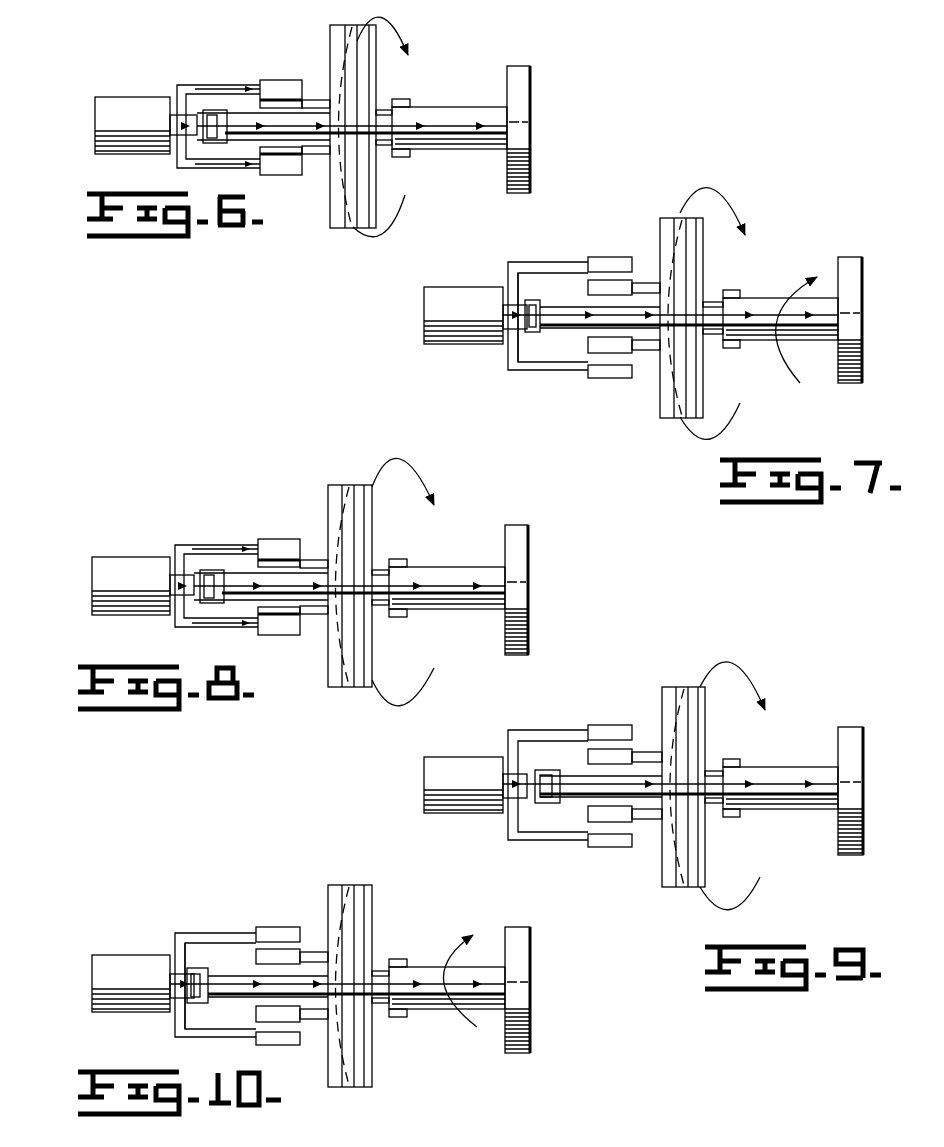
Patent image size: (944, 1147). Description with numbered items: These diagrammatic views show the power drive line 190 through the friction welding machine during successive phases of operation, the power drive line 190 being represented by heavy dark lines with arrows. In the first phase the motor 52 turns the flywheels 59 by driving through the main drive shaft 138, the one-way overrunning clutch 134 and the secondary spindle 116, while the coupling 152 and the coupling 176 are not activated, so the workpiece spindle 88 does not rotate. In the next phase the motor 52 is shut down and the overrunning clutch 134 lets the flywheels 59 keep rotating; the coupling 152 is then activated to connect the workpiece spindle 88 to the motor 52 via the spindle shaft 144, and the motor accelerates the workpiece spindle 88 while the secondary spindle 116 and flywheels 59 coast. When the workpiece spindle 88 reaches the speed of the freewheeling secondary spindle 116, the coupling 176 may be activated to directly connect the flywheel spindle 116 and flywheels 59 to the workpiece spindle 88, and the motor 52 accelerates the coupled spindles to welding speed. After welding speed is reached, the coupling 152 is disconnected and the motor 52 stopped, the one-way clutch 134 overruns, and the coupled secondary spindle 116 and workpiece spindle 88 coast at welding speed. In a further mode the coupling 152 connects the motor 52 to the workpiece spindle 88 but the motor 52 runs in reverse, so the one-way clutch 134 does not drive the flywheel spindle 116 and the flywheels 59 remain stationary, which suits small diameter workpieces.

In FIG. 6, the motor 52 is at (125, 144).
In FIG. 7, the motor 52 is at (463, 332).
In FIG. 8, the motor 52 is at (123, 608).
In FIG. 9, the motor 52 is at (463, 803).
In FIG. 10, the motor 52 is at (126, 1003).
In FIG. 6, the flywheels 59 is at (406, 125).
In FIG. 7, the flywheels 59 is at (671, 305).
In FIG. 8, the flywheels 59 is at (352, 579).
In FIG. 9, the flywheels 59 is at (682, 772).
In FIG. 10, the flywheels 59 is at (315, 962).
In FIG. 6, the workpiece spindle 88 is at (461, 130).
In FIG. 7, the workpiece spindle 88 is at (813, 317).
In FIG. 8, the workpiece spindle 88 is at (476, 590).
In FIG. 9, the workpiece spindle 88 is at (811, 791).
In FIG. 10, the workpiece spindle 88 is at (478, 990).
In FIG. 6, the secondary spindle 116 is at (360, 96).
In FIG. 7, the secondary spindle 116 is at (678, 287).
In FIG. 8, the secondary spindle 116 is at (349, 559).
In FIG. 9, the secondary spindle 116 is at (687, 754).
In FIG. 10, the secondary spindle 116 is at (354, 955).
In FIG. 6, the one-way overrunning clutch 134 is at (272, 107).
In FIG. 7, the one-way overrunning clutch 134 is at (590, 301).
In FIG. 8, the one-way overrunning clutch 134 is at (253, 569).
In FIG. 9, the one-way overrunning clutch 134 is at (586, 768).
In FIG. 10, the one-way overrunning clutch 134 is at (259, 968).
In FIG. 6, the main drive shaft 138 is at (162, 103).
In FIG. 7, the main drive shaft 138 is at (547, 339).
In FIG. 8, the main drive shaft 138 is at (193, 603).
In FIG. 9, the main drive shaft 138 is at (532, 807).
In FIG. 10, the main drive shaft 138 is at (215, 985).
In FIG. 6, the spindle shaft 144 is at (392, 152).
In FIG. 7, the spindle shaft 144 is at (585, 294).
In FIG. 8, the spindle shaft 144 is at (386, 612).
In FIG. 9, the spindle shaft 144 is at (584, 761).
In FIG. 10, the spindle shaft 144 is at (249, 963).
In FIG. 6, the coupling 152 is at (205, 91).
In FIG. 7, the coupling 152 is at (551, 333).
In FIG. 8, the coupling 152 is at (144, 553).
In FIG. 9, the coupling 152 is at (563, 827).
In FIG. 10, the coupling 152 is at (208, 1021).
In FIG. 6, the coupling 176 is at (436, 112).
In FIG. 7, the coupling 176 is at (739, 364).
In FIG. 8, the coupling 176 is at (431, 631).
In FIG. 9, the coupling 176 is at (740, 831).
In FIG. 10, the coupling 176 is at (407, 1031).
In FIG. 6, the power drive line 190 is at (214, 128).
In FIG. 7, the power drive line 190 is at (520, 293).
In FIG. 8, the power drive line 190 is at (196, 583).
In FIG. 10, the power drive line 190 is at (184, 960).